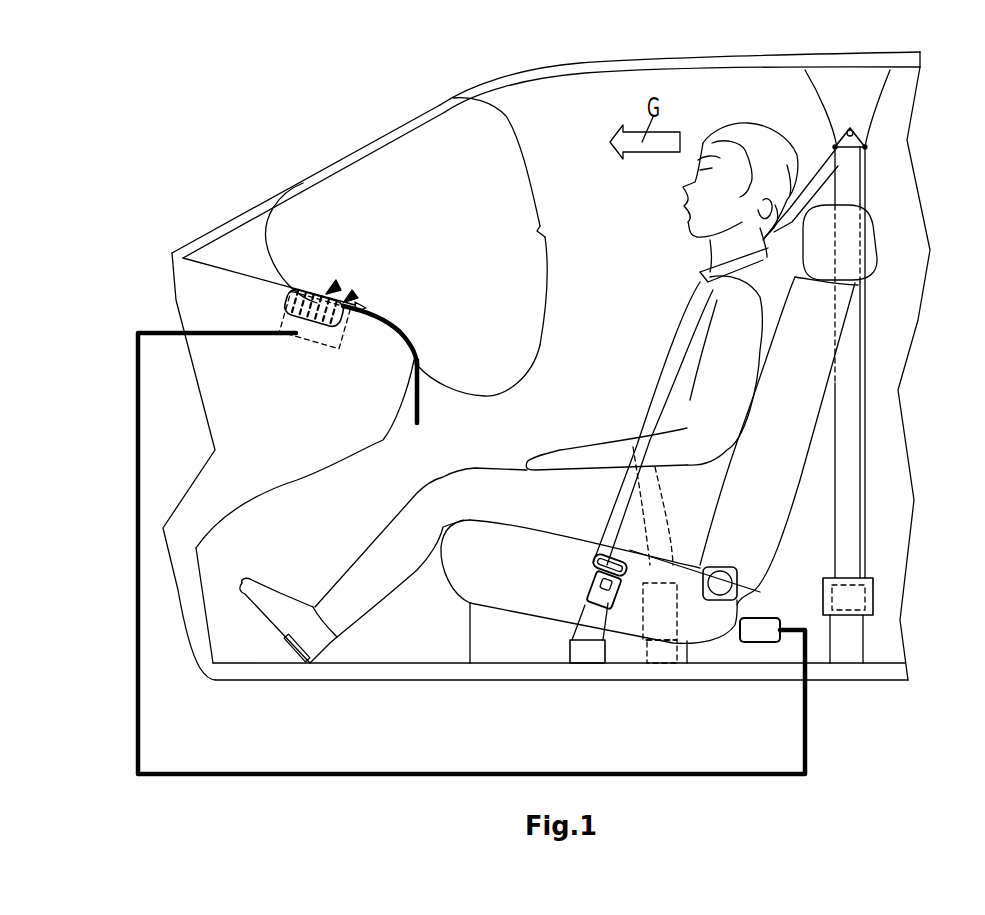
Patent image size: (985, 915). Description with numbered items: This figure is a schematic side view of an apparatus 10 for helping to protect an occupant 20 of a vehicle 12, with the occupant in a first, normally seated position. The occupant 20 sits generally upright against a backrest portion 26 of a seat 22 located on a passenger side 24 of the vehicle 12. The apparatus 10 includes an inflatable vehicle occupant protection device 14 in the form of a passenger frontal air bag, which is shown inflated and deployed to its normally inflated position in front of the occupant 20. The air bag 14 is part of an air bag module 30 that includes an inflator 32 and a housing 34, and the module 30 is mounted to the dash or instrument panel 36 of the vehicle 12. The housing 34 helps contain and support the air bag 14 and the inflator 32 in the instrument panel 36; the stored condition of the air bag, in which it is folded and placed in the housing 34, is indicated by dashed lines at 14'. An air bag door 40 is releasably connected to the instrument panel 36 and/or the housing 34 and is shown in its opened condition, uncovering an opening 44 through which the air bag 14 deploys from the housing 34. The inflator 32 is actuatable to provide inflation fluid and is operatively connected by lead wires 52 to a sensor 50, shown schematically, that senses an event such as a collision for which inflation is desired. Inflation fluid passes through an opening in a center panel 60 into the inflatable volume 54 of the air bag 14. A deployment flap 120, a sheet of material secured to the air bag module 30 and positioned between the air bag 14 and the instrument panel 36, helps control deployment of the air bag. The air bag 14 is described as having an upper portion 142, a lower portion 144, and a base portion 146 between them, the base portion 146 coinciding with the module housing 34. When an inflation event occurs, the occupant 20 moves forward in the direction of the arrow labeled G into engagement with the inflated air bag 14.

The apparatus 10 is at (216, 198).
The vehicle 12 is at (531, 352).
The inflatable vehicle occupant protection device 14 is at (439, 240).
The stored condition of the air bag 14' is at (386, 314).
The occupant 20 is at (738, 150).
The seat 22 is at (702, 434).
The passenger side 24 is at (580, 146).
The backrest portion 26 is at (787, 430).
The air bag module 30 is at (271, 356).
The inflator 32 is at (305, 340).
The housing 34 is at (277, 304).
The instrument panel 36 is at (360, 430).
The air bag door 40 is at (253, 277).
The opening 44 is at (333, 287).
The sensor 50 is at (758, 632).
The lead wires 52 is at (260, 772).
The inflatable volume 54 is at (473, 192).
The center panel 60 is at (548, 250).
The deployment flap 120 is at (420, 407).
The upper portion 142 is at (440, 137).
The lower portion 144 is at (483, 357).
The base portion 146 is at (315, 293).